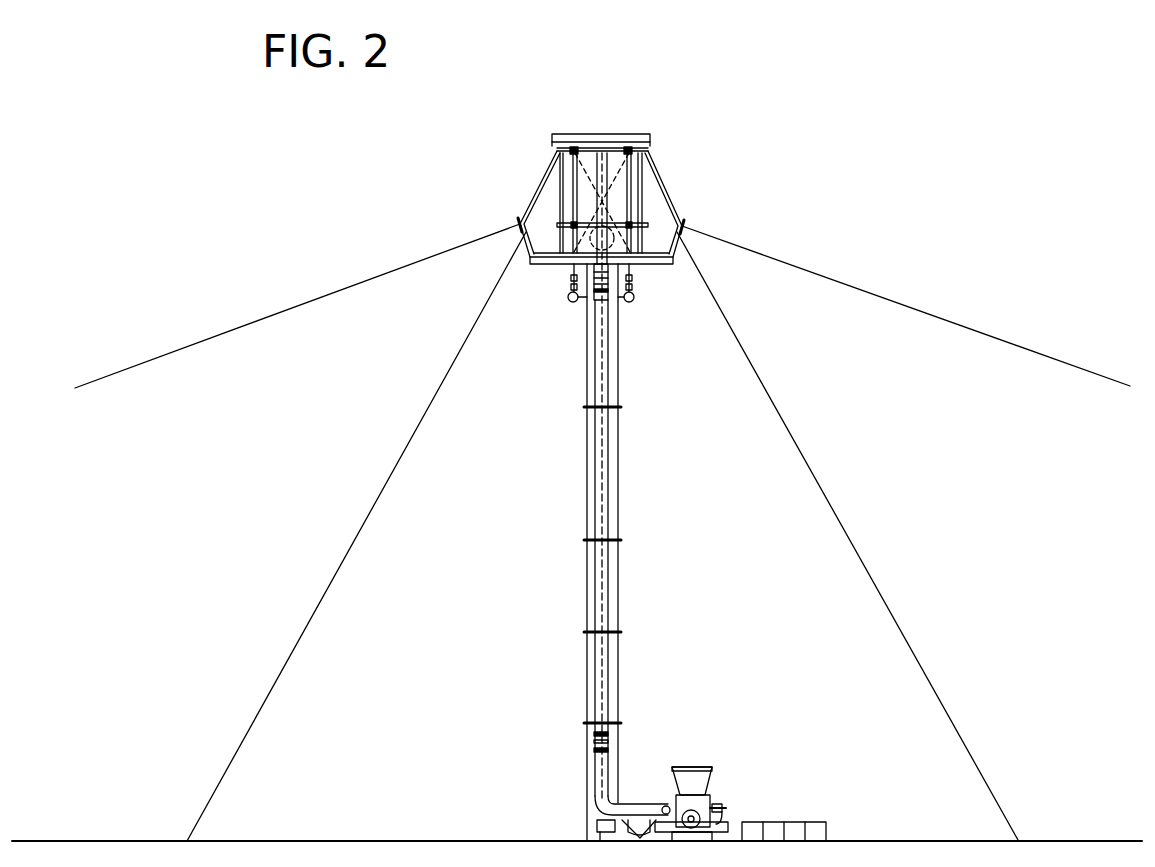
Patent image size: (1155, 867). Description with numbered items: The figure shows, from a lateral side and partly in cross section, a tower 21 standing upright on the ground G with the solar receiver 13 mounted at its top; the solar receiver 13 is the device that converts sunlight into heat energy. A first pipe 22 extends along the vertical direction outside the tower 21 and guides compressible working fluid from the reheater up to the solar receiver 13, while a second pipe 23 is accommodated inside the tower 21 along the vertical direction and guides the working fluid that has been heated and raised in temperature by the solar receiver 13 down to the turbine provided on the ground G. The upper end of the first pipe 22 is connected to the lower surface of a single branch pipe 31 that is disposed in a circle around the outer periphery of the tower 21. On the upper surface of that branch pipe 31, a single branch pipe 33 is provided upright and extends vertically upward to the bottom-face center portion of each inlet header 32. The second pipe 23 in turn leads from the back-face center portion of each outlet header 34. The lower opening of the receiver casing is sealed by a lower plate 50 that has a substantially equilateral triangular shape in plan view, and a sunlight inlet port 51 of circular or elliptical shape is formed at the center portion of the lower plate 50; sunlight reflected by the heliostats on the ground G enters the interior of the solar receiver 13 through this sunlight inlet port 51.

The solar receiver 13 is at (546, 126).
The tower 21 is at (587, 498).
The first pipe 22 is at (609, 579).
The second pipe 23 is at (606, 456).
The branch pipe 31 is at (582, 303).
The inlet header 32 is at (646, 226).
The branch pipe 33 is at (566, 299).
The outlet header 34 is at (654, 160).
The lower plate 50 is at (518, 222).
The sunlight inlet port 51 is at (517, 235).
The ground G is at (430, 838).